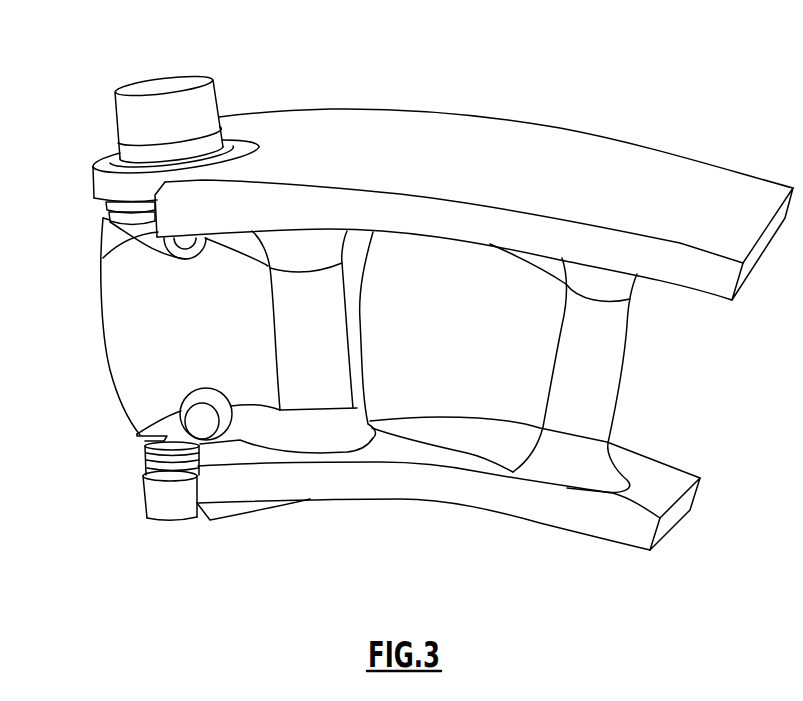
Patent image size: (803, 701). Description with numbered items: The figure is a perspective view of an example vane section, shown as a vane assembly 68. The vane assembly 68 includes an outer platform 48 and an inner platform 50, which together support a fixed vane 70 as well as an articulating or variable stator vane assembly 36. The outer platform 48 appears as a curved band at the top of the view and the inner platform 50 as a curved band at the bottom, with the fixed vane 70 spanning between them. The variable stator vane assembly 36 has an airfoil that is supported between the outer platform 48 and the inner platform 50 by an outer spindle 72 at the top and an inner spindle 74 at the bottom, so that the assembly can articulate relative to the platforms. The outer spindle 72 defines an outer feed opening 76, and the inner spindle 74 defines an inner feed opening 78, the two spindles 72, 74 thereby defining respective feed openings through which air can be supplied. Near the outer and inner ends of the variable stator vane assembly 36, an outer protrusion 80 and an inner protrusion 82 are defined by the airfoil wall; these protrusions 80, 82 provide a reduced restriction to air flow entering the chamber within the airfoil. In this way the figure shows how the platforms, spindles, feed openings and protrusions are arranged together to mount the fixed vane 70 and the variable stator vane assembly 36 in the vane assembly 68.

The variable stator vane assembly 36 is at (104, 333).
The outer platform 48 is at (667, 213).
The inner platform 50 is at (573, 530).
The vane assembly 68 is at (113, 568).
The fixed vane 70 is at (623, 360).
The outer spindle 72 is at (207, 110).
The inner spindle 74 is at (180, 490).
The outer feed opening 76 is at (138, 82).
The inner feed opening 78 is at (230, 519).
The outer protrusion 80 is at (110, 249).
The inner protrusion 82 is at (190, 413).